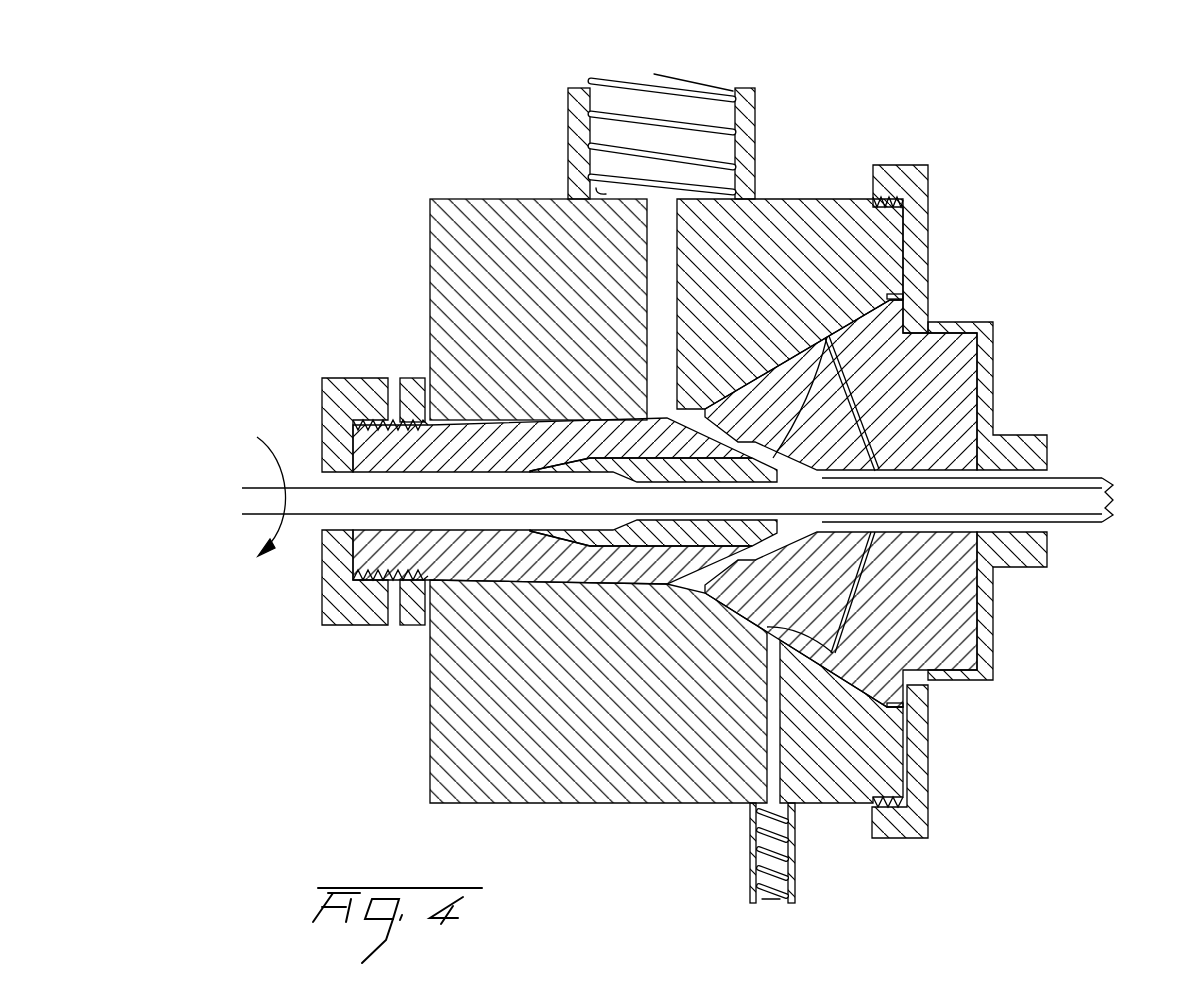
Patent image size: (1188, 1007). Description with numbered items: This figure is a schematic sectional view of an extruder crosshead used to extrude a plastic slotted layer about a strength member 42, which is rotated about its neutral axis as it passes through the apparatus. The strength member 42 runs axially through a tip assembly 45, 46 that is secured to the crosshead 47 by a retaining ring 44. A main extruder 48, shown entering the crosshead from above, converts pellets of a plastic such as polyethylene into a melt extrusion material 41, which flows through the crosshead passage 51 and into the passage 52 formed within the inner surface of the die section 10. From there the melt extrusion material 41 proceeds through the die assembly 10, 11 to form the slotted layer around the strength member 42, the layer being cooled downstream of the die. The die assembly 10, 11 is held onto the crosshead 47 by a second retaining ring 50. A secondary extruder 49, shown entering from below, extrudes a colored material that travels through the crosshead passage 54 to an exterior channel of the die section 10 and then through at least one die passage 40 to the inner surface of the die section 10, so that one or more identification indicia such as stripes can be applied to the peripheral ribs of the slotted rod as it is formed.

The die section 10 is at (960, 598).
The die section 11 is at (988, 368).
The die passage 40 is at (858, 600).
The melt extrusion material 41 is at (1097, 478).
The strength member 42 is at (260, 490).
The retaining ring 44 is at (412, 625).
The tip assembly 45 is at (520, 568).
The tip assembly 46 is at (655, 585).
The crosshead 47 is at (552, 295).
The main extruder 48 is at (697, 150).
The secondary extruder 49 is at (783, 872).
The retaining ring 50 is at (920, 223).
The crosshead passage 51 is at (663, 268).
The passage 52 is at (838, 336).
The crosshead passage 54 is at (773, 748).